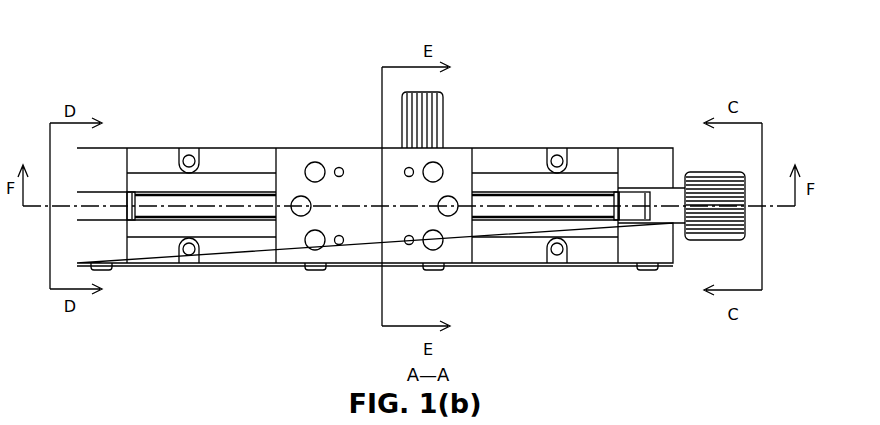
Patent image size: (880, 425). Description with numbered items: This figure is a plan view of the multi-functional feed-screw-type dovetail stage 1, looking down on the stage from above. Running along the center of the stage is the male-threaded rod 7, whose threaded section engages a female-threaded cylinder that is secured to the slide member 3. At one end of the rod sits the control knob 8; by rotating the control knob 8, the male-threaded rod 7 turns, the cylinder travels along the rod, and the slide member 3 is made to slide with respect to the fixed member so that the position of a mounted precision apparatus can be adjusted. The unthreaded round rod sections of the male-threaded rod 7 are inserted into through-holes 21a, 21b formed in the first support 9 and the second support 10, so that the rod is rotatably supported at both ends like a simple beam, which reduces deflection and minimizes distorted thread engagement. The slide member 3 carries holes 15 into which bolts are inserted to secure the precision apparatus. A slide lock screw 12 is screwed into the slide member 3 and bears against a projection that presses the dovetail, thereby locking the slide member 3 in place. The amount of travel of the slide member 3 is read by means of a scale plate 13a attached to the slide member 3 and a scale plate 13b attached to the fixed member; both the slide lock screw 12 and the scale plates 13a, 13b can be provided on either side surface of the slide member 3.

The multi-functional feed-screw-type dovetail stage 1 is at (639, 100).
The slide member 3 is at (362, 158).
The male-threaded rod 7 is at (257, 206).
The control knob 8 is at (736, 188).
The first support 9 is at (103, 162).
The second support 10 is at (663, 162).
The slide lock screw 12 is at (437, 112).
The scale plate 13a is at (356, 264).
The scale plate 13b is at (516, 264).
The holes for mounting a precision apparatus 15 is at (318, 165).
The through-hole for receiving the male-threaded rod 21a is at (85, 213).
The through-hole for receiving the male-threaded rod 21b is at (633, 222).